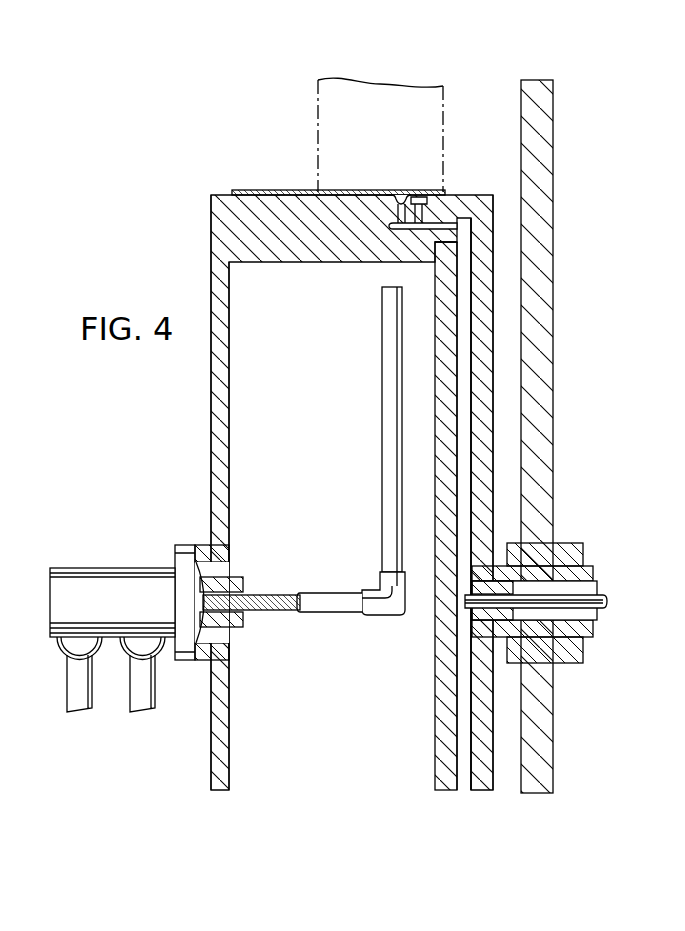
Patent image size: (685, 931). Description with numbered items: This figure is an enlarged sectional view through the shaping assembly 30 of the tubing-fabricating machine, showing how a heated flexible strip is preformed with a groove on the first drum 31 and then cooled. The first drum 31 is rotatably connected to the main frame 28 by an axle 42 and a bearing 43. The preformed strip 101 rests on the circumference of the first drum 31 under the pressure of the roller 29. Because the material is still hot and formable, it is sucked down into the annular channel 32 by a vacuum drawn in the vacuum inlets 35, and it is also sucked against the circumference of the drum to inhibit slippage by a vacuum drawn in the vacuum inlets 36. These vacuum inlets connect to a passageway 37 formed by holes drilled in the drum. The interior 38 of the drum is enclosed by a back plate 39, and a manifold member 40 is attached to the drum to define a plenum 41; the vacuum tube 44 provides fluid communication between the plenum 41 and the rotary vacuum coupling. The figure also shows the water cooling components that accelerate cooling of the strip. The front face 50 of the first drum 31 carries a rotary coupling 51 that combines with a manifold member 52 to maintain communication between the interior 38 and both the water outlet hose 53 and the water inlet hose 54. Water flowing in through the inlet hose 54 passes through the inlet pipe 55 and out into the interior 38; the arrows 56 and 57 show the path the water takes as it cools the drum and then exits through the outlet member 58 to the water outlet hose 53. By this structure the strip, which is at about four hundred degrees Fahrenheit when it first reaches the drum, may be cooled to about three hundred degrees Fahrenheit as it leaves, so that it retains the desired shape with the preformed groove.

The main frame 28 is at (547, 140).
The roller 29 is at (316, 100).
The shaping assembly 30 is at (208, 194).
The first drum 31 is at (213, 245).
The annular channel 32 is at (392, 202).
The vacuum inlets 35 is at (392, 224).
The vacuum inlets 36 is at (418, 207).
The passageway 37 is at (428, 230).
The interior 38 is at (320, 383).
The back plate 39 is at (442, 705).
The manifold member 40 is at (480, 290).
The plenum 41 is at (465, 653).
The axle 42 is at (588, 570).
The bearing 43 is at (572, 543).
The vacuum tube 44 is at (607, 605).
The front face 50 is at (183, 614).
The rotary coupling 51 is at (187, 553).
The manifold member 52 is at (140, 580).
The water outlet hose 53 is at (147, 677).
The water inlet hose 54 is at (80, 702).
The inlet pipe 55 is at (348, 604).
The arrow 56 is at (360, 278).
The arrow 57 is at (255, 588).
The outlet member 58 is at (234, 578).
The preformed strip 101 is at (282, 191).